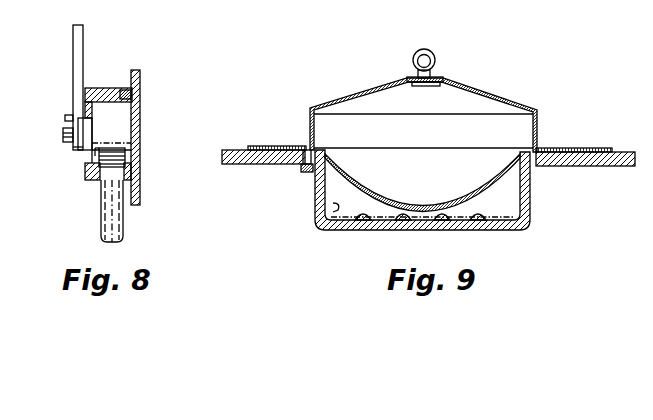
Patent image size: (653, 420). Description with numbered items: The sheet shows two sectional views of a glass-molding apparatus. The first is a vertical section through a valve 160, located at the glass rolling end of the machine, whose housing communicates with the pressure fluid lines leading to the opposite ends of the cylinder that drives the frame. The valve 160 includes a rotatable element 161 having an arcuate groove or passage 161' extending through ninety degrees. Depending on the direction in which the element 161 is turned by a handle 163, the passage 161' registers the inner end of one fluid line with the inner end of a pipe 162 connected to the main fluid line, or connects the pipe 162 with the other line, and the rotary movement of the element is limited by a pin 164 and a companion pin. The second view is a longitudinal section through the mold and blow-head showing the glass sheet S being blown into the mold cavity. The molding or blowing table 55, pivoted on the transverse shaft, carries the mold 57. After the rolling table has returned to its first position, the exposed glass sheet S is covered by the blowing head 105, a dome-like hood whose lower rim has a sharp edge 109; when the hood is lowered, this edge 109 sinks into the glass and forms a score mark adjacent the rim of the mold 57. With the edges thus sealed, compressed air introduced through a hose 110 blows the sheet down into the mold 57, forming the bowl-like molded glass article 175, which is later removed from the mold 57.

In FIG. 8, the valve 160 is at (104, 88).
In FIG. 8, the rotatable element 161 is at (154, 137).
In FIG. 8, the arcuate groove or passage 161' is at (80, 161).
In FIG. 8, the pipe 162 is at (101, 211).
In FIG. 8, the handle 163 is at (75, 56).
In FIG. 8, the pin 164 is at (71, 118).
In FIG. 9, the glass sheet S is at (254, 148).
In FIG. 9, the molding or blowing table 55 is at (569, 168).
In FIG. 9, the mold 57 is at (531, 211).
In FIG. 9, the blowing head 105 is at (476, 92).
In FIG. 9, the sharp edge 109 is at (306, 147).
In FIG. 9, the hose 110 is at (434, 60).
In FIG. 9, the blown, molded glass article 175 is at (325, 206).